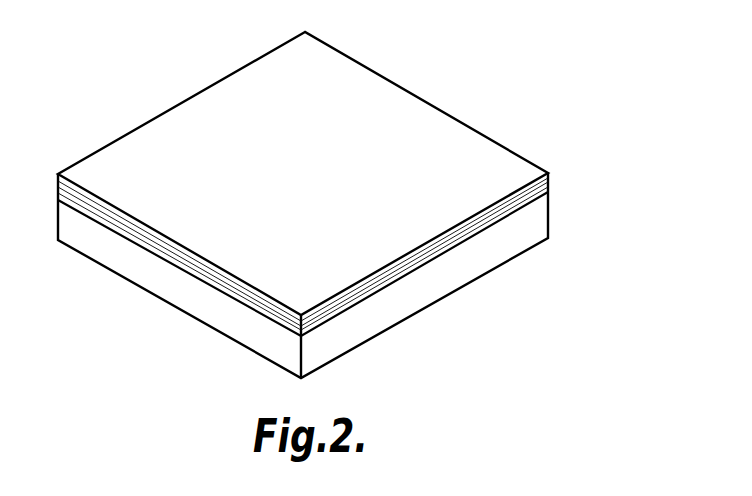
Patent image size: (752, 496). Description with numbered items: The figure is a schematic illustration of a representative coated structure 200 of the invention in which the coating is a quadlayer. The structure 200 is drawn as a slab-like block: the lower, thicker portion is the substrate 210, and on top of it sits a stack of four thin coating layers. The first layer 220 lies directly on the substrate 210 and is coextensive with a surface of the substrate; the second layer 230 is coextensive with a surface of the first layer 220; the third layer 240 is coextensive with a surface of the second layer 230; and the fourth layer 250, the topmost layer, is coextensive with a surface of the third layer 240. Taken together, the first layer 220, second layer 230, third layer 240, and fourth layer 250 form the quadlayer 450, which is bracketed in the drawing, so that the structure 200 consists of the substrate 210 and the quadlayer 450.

The representative structure 200 is at (365, 205).
The substrate 210 is at (520, 254).
The first layer 220 is at (335, 260).
The second layer 230 is at (549, 183).
The third layer 240 is at (549, 178).
The fourth layer 250 is at (550, 173).
The quadlayer 450 is at (365, 184).